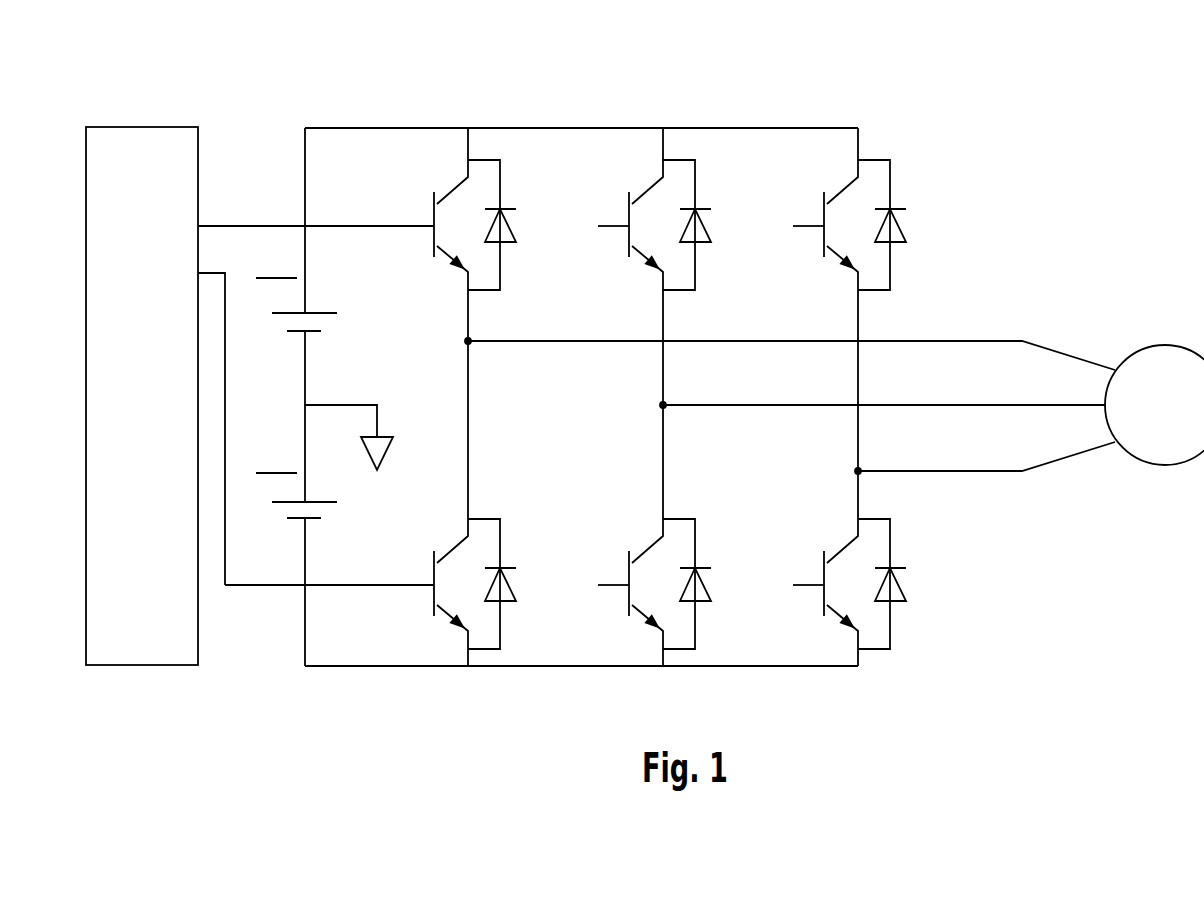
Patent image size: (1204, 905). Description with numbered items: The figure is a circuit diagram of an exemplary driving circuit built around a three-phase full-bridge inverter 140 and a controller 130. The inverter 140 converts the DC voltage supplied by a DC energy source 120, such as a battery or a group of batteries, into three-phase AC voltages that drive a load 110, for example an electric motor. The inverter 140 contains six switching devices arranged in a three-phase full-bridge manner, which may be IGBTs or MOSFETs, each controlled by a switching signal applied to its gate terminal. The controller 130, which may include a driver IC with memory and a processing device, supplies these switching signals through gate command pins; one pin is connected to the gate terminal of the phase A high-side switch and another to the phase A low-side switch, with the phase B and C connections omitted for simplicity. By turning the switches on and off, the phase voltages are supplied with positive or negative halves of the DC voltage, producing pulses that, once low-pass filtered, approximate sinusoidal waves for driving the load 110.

The load 110 is at (1180, 432).
The DC energy source 120 is at (313, 333).
The controller 130 is at (160, 590).
The three-phase full-bridge inverter 140 is at (488, 112).